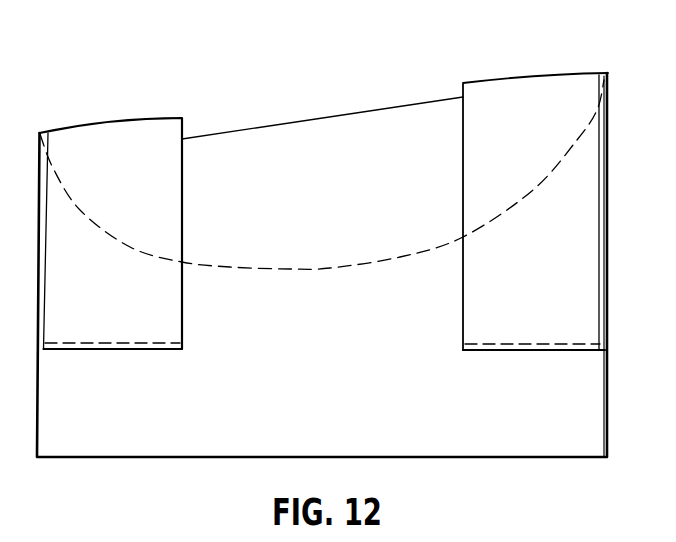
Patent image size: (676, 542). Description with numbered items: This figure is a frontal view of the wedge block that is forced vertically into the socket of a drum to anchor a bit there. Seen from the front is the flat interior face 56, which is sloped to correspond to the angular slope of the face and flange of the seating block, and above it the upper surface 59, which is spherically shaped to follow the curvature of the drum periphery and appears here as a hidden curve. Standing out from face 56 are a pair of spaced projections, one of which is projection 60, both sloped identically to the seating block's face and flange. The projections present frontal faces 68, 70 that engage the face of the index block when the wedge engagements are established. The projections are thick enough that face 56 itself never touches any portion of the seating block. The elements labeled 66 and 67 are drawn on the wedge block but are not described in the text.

The flat interior face 56 is at (287, 138).
The upper surface 59 is at (371, 152).
The projection 60 is at (147, 130).
The base 66 is at (542, 458).
The right pocket 67 is at (581, 74).
The frontal face 68 is at (153, 347).
The frontal face 70 is at (538, 352).